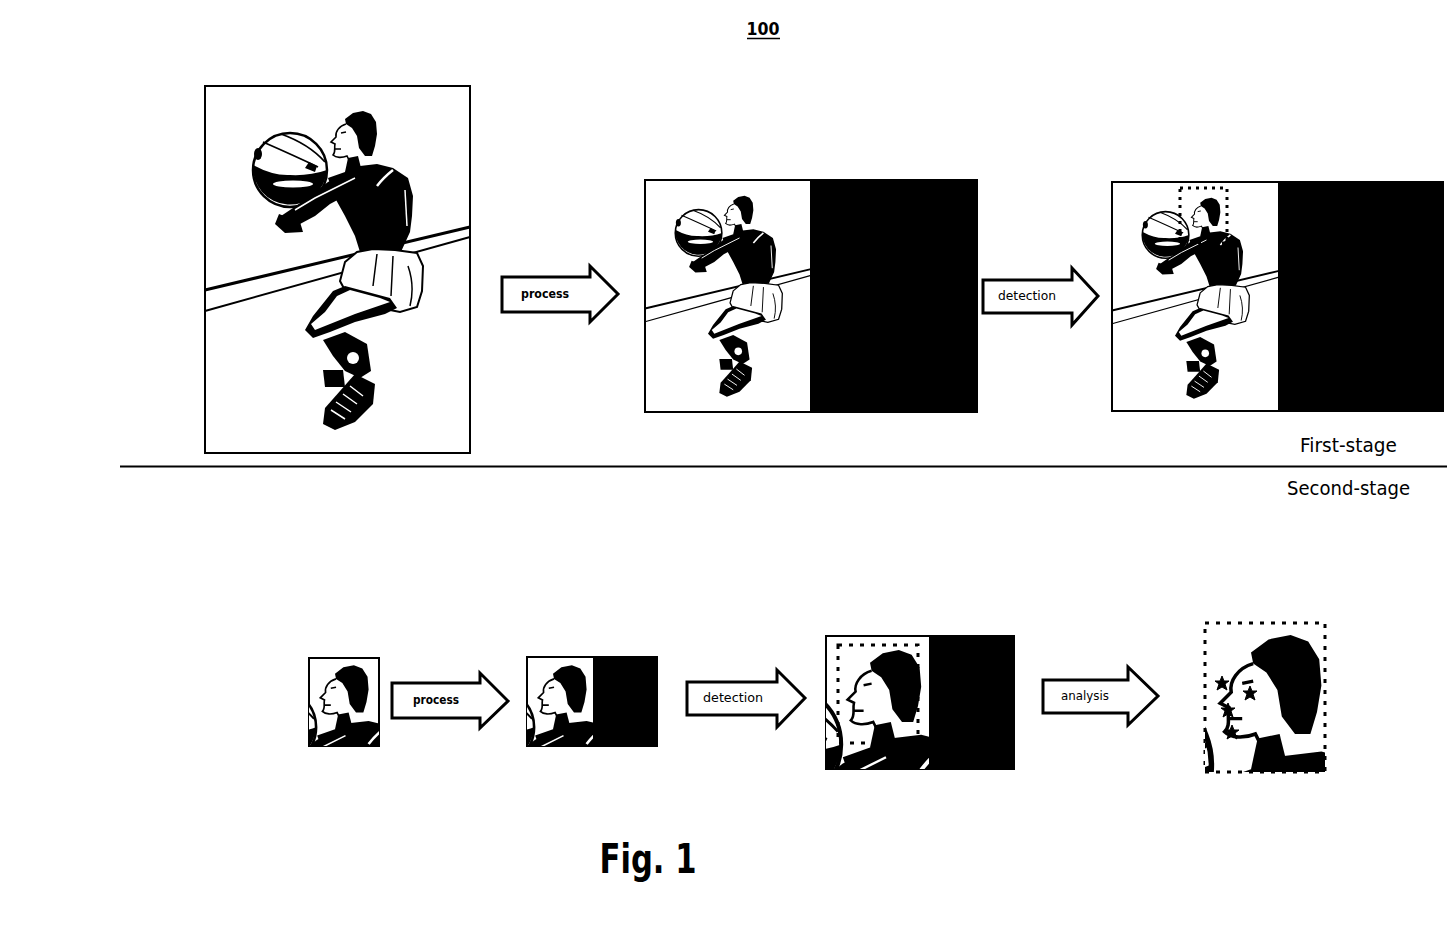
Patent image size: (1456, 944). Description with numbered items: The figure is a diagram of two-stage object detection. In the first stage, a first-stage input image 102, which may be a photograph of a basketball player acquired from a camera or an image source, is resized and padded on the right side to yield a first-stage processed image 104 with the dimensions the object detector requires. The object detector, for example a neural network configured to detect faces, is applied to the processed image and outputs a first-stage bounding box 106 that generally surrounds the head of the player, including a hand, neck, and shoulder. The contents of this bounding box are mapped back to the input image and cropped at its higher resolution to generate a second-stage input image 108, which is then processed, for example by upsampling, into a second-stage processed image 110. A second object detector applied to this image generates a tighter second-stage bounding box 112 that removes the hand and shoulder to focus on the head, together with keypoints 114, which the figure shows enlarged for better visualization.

The first-stage input image 102 is at (204, 133).
The first-stage processed image 104 is at (644, 217).
The first-stage bounding box 106 is at (1180, 190).
The second-stage input image 108 is at (331, 661).
The second-stage processed image 110 is at (583, 659).
The second-stage bounding box 112 is at (880, 649).
The keypoints 114 is at (1298, 706).